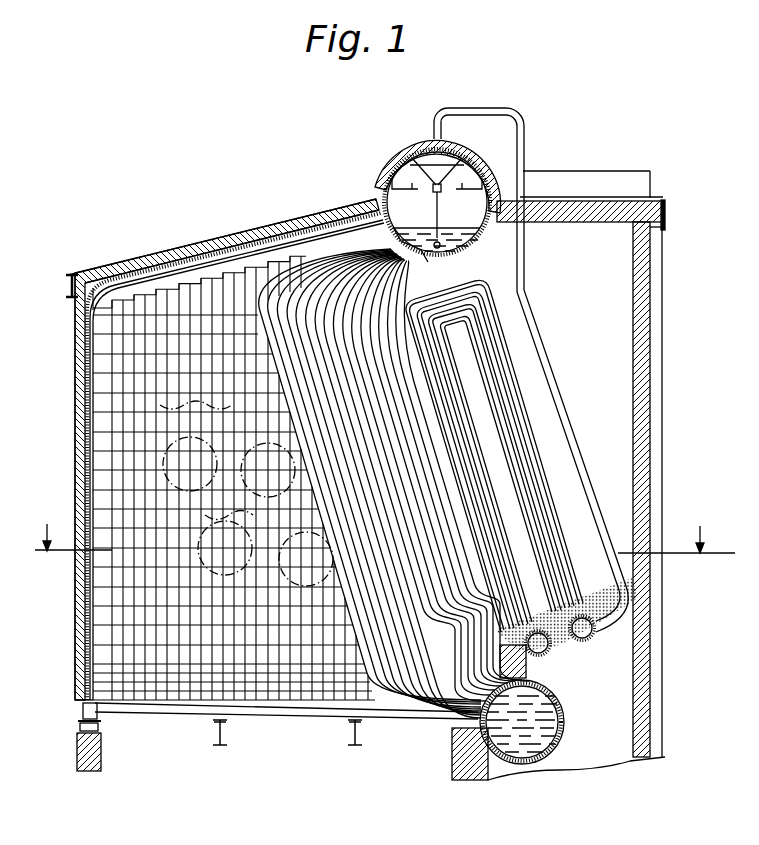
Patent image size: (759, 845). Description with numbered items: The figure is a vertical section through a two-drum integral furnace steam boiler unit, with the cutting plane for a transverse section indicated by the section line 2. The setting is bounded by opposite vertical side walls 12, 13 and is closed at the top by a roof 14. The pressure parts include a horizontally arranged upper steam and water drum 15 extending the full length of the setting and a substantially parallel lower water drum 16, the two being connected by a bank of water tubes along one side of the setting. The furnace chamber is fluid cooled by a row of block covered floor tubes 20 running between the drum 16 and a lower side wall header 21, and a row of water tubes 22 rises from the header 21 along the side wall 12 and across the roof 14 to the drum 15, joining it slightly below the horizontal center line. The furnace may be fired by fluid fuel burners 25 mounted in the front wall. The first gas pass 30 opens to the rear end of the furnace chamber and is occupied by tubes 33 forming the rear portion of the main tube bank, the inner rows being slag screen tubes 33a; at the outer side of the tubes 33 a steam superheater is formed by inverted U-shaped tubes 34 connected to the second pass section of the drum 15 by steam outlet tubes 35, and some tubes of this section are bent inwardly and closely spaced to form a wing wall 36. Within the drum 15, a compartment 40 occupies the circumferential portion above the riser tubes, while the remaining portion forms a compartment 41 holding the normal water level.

The section line 2- 2 is at (385, 528).
The side wall 12 is at (75, 426).
The side wall 13 is at (648, 433).
The roof 14 is at (230, 243).
The upper steam and water drum 15 is at (474, 243).
The lower water drum 16 is at (560, 702).
The floor tubes 20 is at (272, 727).
The lower side wall header 21 is at (80, 714).
The water tubes 22 is at (90, 563).
The fluid fuel burners 25 is at (246, 493).
The first gas pass 30 is at (502, 444).
The tubes 33 is at (392, 273).
The slag screen tubes 33a is at (386, 268).
The inverted U-shaped tubes 34 is at (510, 354).
The steam outlet tubes 35 is at (553, 384).
The wing wall 36 is at (292, 358).
The compartment 40 is at (392, 178).
The compartment 41 is at (437, 210).